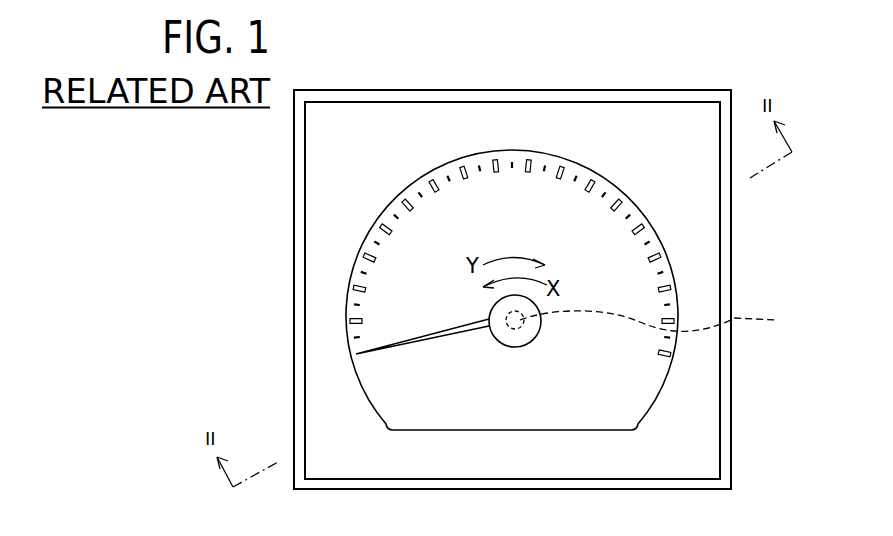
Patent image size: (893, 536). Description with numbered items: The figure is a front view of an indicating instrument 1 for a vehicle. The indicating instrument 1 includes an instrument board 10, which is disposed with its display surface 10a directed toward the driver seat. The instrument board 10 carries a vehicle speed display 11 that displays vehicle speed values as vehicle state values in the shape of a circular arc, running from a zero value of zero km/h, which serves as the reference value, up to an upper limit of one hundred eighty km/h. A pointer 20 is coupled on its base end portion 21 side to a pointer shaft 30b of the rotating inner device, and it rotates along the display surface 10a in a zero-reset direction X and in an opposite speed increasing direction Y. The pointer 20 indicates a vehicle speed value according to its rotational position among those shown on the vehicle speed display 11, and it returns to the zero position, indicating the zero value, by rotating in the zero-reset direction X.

The indicating instrument 1 is at (703, 80).
The instrument board 10 is at (396, 123).
The display surface 10a is at (367, 180).
The vehicle speed display 11 is at (487, 162).
The pointer 20 is at (441, 340).
The base end portion 21 is at (515, 347).
The pointer shaft 30b is at (668, 321).